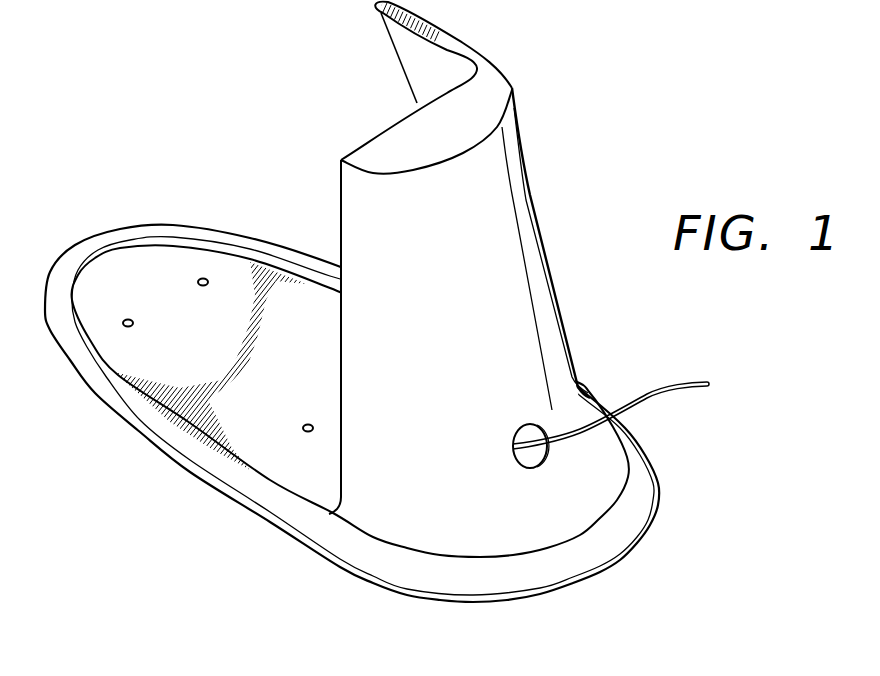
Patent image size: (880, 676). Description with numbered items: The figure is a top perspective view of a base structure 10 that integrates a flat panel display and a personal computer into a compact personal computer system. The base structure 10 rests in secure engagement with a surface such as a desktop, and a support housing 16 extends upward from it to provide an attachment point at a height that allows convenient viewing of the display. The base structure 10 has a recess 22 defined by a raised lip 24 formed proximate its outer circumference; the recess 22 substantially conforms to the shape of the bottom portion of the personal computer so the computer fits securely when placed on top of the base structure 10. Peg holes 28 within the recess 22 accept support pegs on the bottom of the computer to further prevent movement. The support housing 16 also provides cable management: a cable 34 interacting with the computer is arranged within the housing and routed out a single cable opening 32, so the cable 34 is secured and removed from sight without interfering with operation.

The base structure 10 is at (329, 379).
The support housing 16 is at (558, 215).
The recess 22 is at (173, 273).
The raised lip 24 is at (96, 246).
The peg holes 28 is at (133, 323).
The cable opening 32 is at (545, 462).
The cable 34 is at (684, 380).